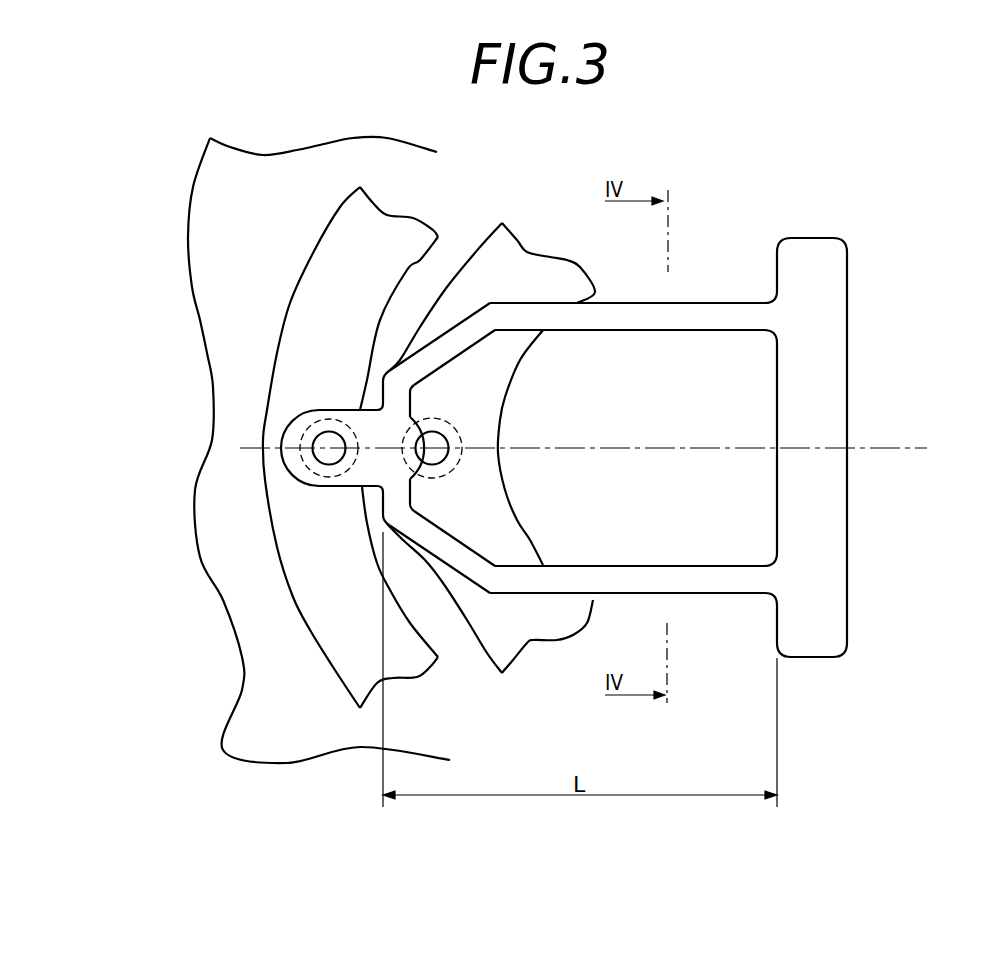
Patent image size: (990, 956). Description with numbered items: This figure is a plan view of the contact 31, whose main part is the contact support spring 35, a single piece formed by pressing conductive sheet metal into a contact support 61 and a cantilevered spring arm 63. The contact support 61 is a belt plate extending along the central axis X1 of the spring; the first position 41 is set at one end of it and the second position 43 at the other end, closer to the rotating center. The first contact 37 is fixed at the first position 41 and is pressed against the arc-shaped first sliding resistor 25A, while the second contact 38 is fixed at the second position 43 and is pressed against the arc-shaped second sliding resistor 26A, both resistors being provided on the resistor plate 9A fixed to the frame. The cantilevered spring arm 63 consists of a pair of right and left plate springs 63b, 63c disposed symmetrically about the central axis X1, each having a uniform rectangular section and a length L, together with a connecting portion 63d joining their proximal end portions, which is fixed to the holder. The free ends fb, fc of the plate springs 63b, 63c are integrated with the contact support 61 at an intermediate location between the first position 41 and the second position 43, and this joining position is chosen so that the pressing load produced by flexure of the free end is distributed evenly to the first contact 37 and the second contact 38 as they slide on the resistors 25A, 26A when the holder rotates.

The resistor plate 9A is at (233, 603).
The first sliding resistor 25A is at (308, 263).
The second sliding resistor 26A is at (467, 260).
The contact 31 is at (861, 402).
The contact support spring 35 is at (468, 538).
The first contact 37 is at (310, 470).
The second contact 38 is at (470, 413).
The first position 41 is at (318, 433).
The second position 43 is at (431, 430).
The contact support 61 is at (364, 578).
The cantilevered spring arm 63 is at (583, 512).
The plate spring 63b is at (723, 313).
The plate spring 63c is at (718, 573).
The connecting portion 63d is at (825, 513).
The free end fb is at (398, 399).
The free end fc is at (397, 498).
The central axis X1 is at (903, 448).